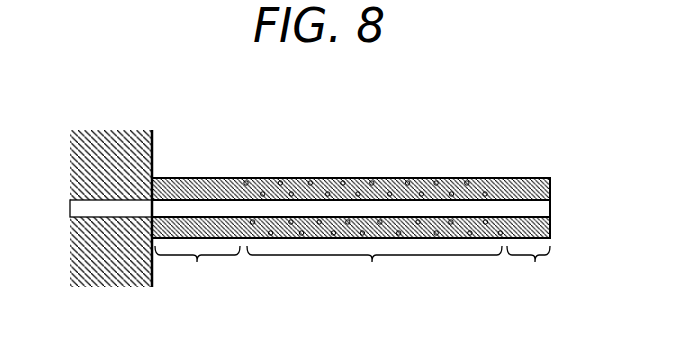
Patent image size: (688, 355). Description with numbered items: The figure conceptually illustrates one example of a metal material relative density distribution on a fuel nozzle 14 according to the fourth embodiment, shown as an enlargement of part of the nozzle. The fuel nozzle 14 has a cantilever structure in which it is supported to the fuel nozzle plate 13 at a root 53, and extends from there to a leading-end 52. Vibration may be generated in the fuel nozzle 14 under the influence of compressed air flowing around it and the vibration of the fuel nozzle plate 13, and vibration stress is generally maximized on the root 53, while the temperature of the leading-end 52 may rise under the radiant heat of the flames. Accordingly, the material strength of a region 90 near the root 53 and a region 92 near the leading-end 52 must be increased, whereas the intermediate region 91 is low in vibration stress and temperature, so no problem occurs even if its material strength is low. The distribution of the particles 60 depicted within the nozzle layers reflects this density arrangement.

The fuel nozzle plate 13 is at (100, 137).
The fuel nozzle 14 is at (297, 177).
The root 53 is at (158, 175).
The particles 60 is at (387, 177).
The leading-end 52 is at (538, 177).
The region 90 is at (197, 271).
The region 91 is at (374, 271).
The region 92 is at (528, 271).